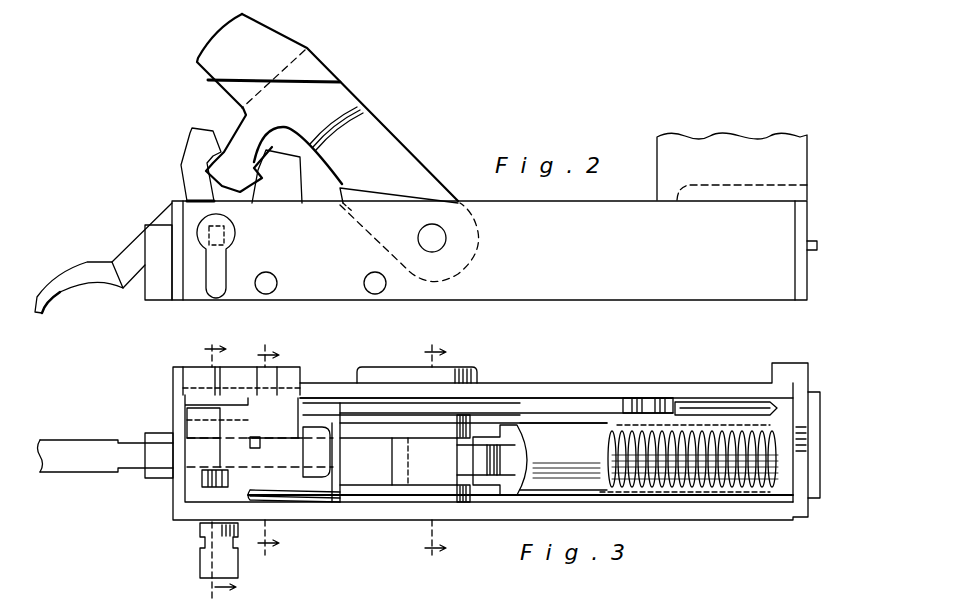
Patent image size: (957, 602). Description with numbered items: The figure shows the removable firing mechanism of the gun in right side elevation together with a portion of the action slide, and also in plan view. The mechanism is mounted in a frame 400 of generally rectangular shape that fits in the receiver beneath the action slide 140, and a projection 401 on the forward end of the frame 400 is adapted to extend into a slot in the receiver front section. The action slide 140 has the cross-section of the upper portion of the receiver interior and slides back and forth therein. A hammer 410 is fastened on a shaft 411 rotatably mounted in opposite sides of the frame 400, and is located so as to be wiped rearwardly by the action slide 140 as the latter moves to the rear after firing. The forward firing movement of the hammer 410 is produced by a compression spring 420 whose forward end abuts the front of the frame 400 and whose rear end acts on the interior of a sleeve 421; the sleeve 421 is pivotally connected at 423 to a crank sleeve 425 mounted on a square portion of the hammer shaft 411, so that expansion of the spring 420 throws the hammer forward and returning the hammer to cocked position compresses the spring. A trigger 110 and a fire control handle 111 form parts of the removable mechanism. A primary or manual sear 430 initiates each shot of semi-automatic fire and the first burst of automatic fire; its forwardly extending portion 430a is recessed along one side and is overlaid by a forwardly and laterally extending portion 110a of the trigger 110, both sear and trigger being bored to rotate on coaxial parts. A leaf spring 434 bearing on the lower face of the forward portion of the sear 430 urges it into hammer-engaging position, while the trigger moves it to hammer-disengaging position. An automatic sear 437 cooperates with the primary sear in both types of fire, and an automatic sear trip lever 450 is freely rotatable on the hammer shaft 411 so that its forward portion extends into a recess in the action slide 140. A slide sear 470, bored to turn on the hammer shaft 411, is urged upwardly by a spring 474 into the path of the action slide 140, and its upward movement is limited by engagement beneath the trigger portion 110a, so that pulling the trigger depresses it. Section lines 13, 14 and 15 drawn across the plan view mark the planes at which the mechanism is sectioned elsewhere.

In FIG. 2, the frame 400 is at (611, 197).
In FIG. 3, the frame 400 is at (617, 390).
In FIG. 2, the projection 401 is at (807, 246).
In FIG. 3, the projection 401 is at (815, 500).
In FIG. 2, the action slide 140 is at (708, 146).
In FIG. 2, the trigger 110 is at (90, 249).
In FIG. 3, the trigger 110 is at (77, 463).
In FIG. 2, the fire control handle 111 is at (216, 277).
In FIG. 3, the fire control handle 111 is at (200, 562).
In FIG. 2, the hammer shaft 411 is at (434, 226).
In FIG. 2, the hammer 410 is at (322, 64).
In FIG. 3, the hammer 410 is at (447, 372).
In FIG. 2, the primary or manual sear 430 is at (287, 153).
In FIG. 2, the automatic sear 437 is at (188, 138).
In FIG. 2, the slide sear 470 is at (340, 188).
In FIG. 3, the slide sear 470 is at (347, 462).
In FIG. 3, the section line 13- 13 is at (190, 462).
In FIG. 3, the section line 14- 14 is at (263, 455).
In FIG. 3, the section line 15- 15 is at (434, 455).
In FIG. 3, the forwardly and laterally extending portion of the trigger 110a is at (258, 440).
In FIG. 3, the forwardly extending portion of the sear 430a is at (257, 447).
In FIG. 3, the leaf spring 434 is at (327, 380).
In FIG. 3, the spring 474 is at (287, 493).
In FIG. 3, the crank sleeve 425 is at (418, 448).
In FIG. 3, the pivotal connection 423 is at (478, 432).
In FIG. 3, the automatic sear trip lever 450 is at (525, 412).
In FIG. 3, the sleeve 421 is at (543, 430).
In FIG. 3, the compression spring 420 is at (697, 420).